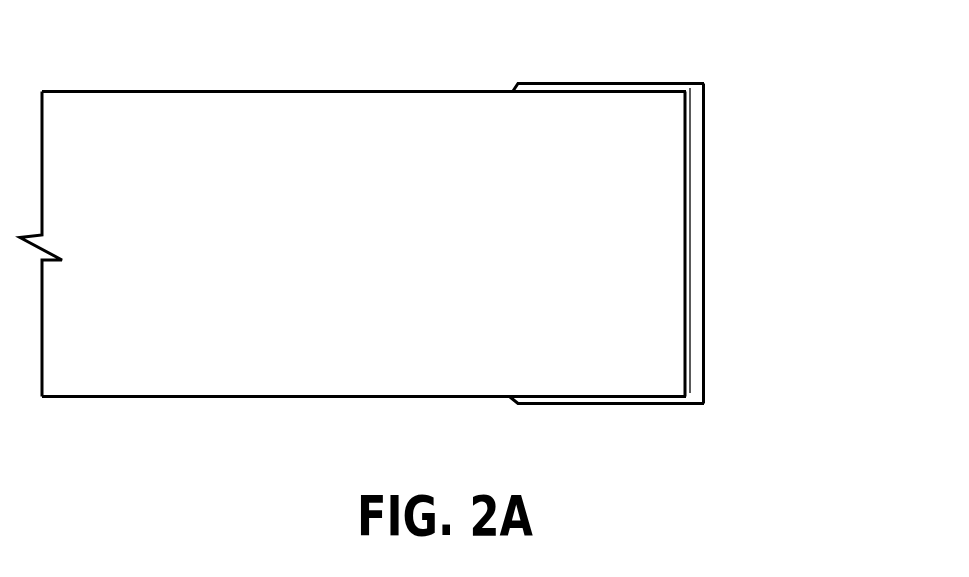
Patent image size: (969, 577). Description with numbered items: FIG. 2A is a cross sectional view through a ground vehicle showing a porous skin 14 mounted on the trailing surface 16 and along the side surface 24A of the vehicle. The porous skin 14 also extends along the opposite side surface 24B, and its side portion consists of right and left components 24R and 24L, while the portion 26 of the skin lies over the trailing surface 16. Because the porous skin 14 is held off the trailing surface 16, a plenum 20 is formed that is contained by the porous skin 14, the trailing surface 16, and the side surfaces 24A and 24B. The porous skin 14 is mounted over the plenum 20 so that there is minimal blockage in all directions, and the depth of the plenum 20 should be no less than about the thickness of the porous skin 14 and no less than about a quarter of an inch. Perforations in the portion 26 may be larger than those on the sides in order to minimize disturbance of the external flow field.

The porous skin 14 is at (770, 155).
The trailing surface 16 is at (685, 273).
The plenum 20 is at (698, 350).
The side surface 24A is at (290, 398).
The side surface 24B is at (293, 89).
The left component of side portion 24L is at (647, 406).
The right component of side portion 24R is at (648, 82).
The trailing surface portion of porous skin 26 is at (704, 295).